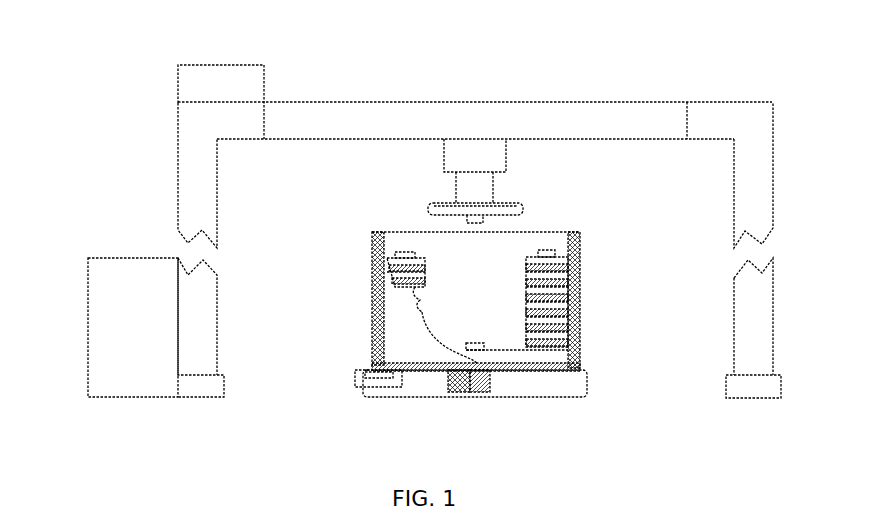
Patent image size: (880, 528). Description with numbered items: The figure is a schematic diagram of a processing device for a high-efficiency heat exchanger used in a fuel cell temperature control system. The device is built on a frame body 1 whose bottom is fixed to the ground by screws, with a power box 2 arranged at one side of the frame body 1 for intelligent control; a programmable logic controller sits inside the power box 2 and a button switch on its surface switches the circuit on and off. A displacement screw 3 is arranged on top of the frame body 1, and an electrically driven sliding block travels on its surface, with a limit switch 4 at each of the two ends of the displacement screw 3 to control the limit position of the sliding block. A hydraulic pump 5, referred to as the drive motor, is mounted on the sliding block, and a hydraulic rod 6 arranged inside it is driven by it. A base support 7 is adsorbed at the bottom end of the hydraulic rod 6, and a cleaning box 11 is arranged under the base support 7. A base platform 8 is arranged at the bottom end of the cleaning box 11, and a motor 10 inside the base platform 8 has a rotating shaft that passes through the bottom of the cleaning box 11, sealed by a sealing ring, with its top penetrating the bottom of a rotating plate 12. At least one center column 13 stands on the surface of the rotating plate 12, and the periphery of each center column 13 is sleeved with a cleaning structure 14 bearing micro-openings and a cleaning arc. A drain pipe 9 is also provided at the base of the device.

The frame body 1 is at (198, 156).
The power box 2 is at (120, 305).
The displacement screw 3 is at (396, 119).
The limit switch 4 is at (244, 117).
The hydraulic pump 5 is at (493, 154).
The hydraulic rod 6 is at (478, 187).
The base support 7 is at (522, 208).
The base platform 8 is at (540, 398).
The drain pipe 9 is at (390, 382).
The motor 10 is at (472, 390).
The cleaning box 11 is at (578, 345).
The rotating plate 12 is at (547, 355).
The center column 13 is at (548, 250).
The cleaning structure 14 is at (402, 250).